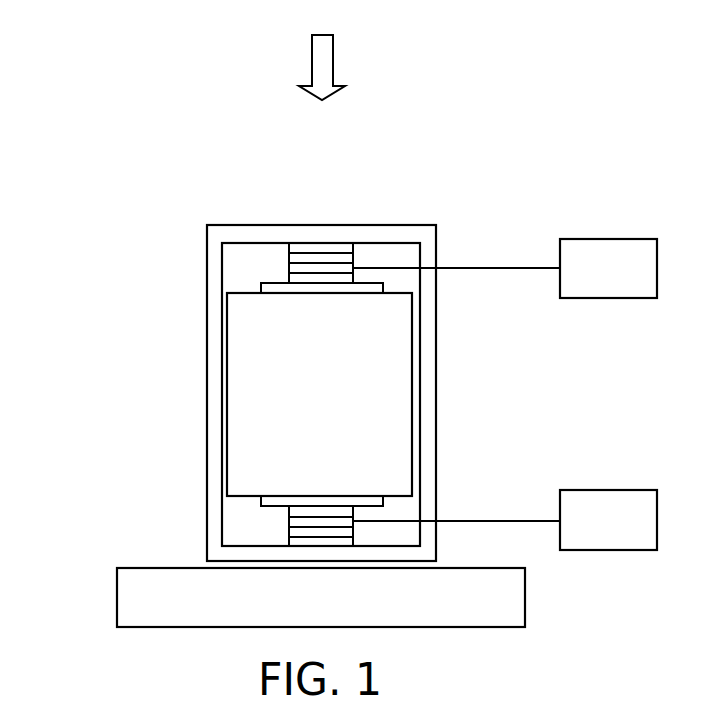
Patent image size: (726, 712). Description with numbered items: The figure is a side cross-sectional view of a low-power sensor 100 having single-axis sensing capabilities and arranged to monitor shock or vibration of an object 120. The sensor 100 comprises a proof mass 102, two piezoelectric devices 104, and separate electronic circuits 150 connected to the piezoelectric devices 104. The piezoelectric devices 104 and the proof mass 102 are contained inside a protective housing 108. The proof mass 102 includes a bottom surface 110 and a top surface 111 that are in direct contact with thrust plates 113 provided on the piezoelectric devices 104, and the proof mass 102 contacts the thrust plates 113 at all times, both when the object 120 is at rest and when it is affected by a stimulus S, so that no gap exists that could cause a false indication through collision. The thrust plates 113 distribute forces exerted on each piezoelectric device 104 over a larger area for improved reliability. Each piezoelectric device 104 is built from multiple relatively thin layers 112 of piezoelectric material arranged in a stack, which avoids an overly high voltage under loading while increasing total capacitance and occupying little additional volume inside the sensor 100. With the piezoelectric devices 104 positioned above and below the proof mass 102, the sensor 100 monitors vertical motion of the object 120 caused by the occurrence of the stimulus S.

The low-power sensor 100 is at (565, 162).
The proof mass 102 is at (340, 408).
The piezoelectric device 104 is at (356, 260).
The protective housing 108 is at (437, 340).
The bottom surface 110 is at (235, 510).
The top surface 111 is at (253, 292).
The layers of piezoelectric material 112 is at (327, 248).
The thrust plate 113 is at (422, 288).
The object 120 is at (117, 598).
The electronic circuit 150 is at (632, 298).
The stimulus S is at (322, 50).